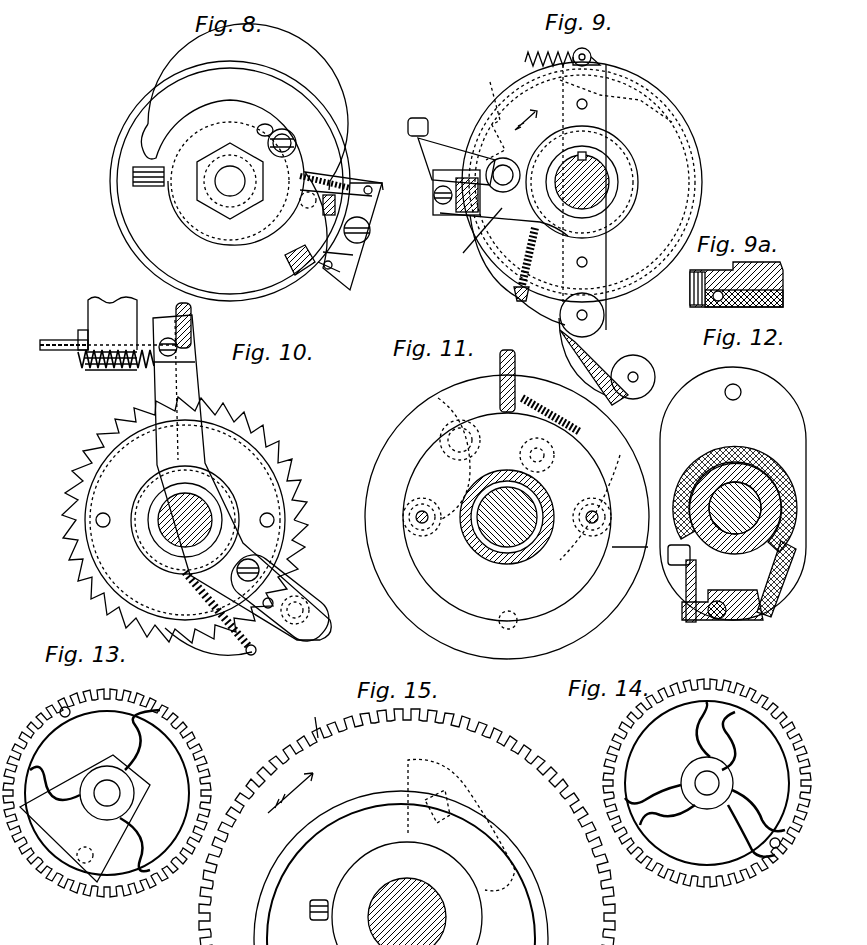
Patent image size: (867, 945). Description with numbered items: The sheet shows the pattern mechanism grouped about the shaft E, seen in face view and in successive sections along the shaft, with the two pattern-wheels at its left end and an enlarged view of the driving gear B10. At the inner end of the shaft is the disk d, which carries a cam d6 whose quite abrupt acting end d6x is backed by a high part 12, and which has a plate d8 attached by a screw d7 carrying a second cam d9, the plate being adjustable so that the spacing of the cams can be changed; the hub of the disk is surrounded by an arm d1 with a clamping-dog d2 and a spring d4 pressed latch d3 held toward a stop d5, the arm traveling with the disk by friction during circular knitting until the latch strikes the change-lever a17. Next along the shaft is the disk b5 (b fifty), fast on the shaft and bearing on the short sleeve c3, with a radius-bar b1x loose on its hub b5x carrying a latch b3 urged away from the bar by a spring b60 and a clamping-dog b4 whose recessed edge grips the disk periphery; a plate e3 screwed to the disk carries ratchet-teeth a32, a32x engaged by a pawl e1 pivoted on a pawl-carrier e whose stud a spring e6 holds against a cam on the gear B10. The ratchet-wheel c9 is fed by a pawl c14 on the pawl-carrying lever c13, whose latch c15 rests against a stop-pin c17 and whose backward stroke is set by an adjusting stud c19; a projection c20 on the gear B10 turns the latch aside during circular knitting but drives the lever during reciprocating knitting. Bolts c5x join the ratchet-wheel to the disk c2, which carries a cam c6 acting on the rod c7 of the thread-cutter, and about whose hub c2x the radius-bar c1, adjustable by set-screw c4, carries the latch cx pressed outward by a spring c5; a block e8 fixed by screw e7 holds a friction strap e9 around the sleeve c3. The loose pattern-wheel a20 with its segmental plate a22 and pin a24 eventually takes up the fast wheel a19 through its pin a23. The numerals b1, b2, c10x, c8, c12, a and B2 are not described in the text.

In FIG. 8, the disk d is at (110, 182).
In FIG. 8, the cam d9 is at (143, 150).
In FIG. 8, the plate d8 is at (188, 210).
In FIG. 8, the shaft E is at (222, 183).
In FIG. 9, the shaft E is at (592, 184).
In FIG. 10, the shaft E is at (207, 495).
In FIG. 11, the shaft E is at (497, 530).
In FIG. 12, the shaft E is at (732, 482).
In FIG. 8, the screw d7 is at (290, 136).
In FIG. 8, the cam d6 is at (315, 150).
In FIG. 8, the high part 12 is at (312, 252).
In FIG. 8, the arm d1 is at (282, 236).
In FIG. 8, the clamping-dog d2 is at (365, 205).
In FIG. 8, the latch d3 is at (355, 268).
In FIG. 8, the stop d5 is at (333, 276).
In FIG. 8, the spring d4 is at (346, 176).
In FIG. 8, the abrupt end of cam d6x is at (292, 285).
In FIG. 9, the plate e3 is at (690, 126).
In FIG. 9A, the plate e3 is at (776, 268).
In FIG. 9, the ratchet-teeth a32 is at (598, 88).
In FIG. 9, the ratchet-teeth a32x is at (483, 112).
In FIG. 9, the spring e6 is at (525, 58).
In FIG. 9, the disk b5 is at (694, 203).
In FIG. 9A, the disk b5 is at (783, 290).
In FIG. 9, the hub b5x is at (600, 210).
In FIG. 9, the latch b3 is at (440, 148).
In FIG. 9, the change-lever a17 is at (419, 118).
In FIG. 9, the clamping-dog b4 is at (436, 220).
In FIG. 9A, the clamping-dog b4 is at (690, 285).
In FIG. 9, the frame b1 is at (482, 240).
In FIG. 9, the screw b2 is at (440, 214).
In FIG. 9, the spring b60 is at (470, 222).
In FIG. 9A, the spring b60 is at (700, 308).
In FIG. 9, the radius-bar b1x is at (475, 246).
In FIG. 9A, the radius-bar b1x is at (745, 308).
In FIG. 9, the pawl e1 is at (533, 310).
In FIG. 9, the pawl-carrier e is at (604, 333).
In FIG. 10, the ratchet-wheel c9 is at (257, 437).
In FIG. 10, the pawl c10x is at (82, 525).
In FIG. 10, the hole c8 is at (100, 525).
In FIG. 10, the sleeve c3 is at (160, 537).
In FIG. 11, the sleeve c3 is at (522, 547).
In FIG. 12, the sleeve c3 is at (762, 386).
In FIG. 10, the pawl-carrying lever c13 is at (188, 392).
In FIG. 10, the screw c12 is at (180, 345).
In FIG. 10, the block a is at (111, 333).
In FIG. 10, the adjusting stud c19 is at (58, 340).
In FIG. 10, the latch c15 is at (80, 368).
In FIG. 10, the stop-pin c17 is at (272, 610).
In FIG. 10, the pawl c14 is at (237, 655).
In FIG. 11, the disk c2 is at (580, 625).
In FIG. 11, the cam c6 is at (600, 580).
In FIG. 11, the hub c2x is at (472, 540).
In FIG. 11, the bolts c5x is at (415, 517).
In FIG. 11, the rod c7 is at (515, 380).
In FIG. 11, the spring c5 is at (530, 430).
In FIG. 11, the set-screw c4 is at (432, 437).
In FIG. 11, the radius-bar c1 is at (450, 410).
In FIG. 11, the latch cx is at (560, 450).
In FIG. 12, the brake or friction strap e9 is at (755, 458).
In FIG. 12, the block e8 is at (742, 590).
In FIG. 12, the screw e7 is at (720, 618).
In FIG. 13, the toothed pattern-wheel a20 is at (197, 745).
In FIG. 13, the segmental plate a22 is at (70, 855).
In FIG. 13, the pin a24 is at (62, 708).
In FIG. 14, the pattern-wheel a19 is at (772, 714).
In FIG. 14, the pin a23 is at (774, 849).
In FIG. 15, the gear B10 is at (407, 823).
In FIG. 15, the shaft B2 is at (415, 923).
In FIG. 15, the projection c20 is at (450, 768).